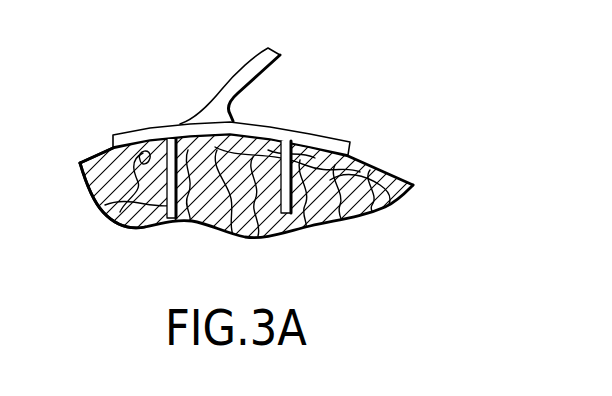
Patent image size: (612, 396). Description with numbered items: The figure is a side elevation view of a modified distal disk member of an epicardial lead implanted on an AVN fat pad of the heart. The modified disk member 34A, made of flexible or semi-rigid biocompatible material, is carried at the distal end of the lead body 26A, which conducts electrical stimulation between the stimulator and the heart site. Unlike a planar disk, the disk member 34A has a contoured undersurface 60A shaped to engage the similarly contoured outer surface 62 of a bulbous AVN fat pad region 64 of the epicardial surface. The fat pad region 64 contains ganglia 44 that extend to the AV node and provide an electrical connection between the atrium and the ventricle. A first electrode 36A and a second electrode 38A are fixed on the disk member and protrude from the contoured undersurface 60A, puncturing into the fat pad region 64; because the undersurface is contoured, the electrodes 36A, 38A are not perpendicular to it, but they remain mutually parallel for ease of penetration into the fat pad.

The lead body 26A is at (252, 60).
The modified disk member 34A is at (134, 107).
The first electrode 36A is at (312, 224).
The second electrode 38A is at (157, 219).
The ganglia 44 is at (101, 211).
The contoured undersurface 60A is at (233, 205).
The outer surface 62 is at (372, 174).
The bulbous AVN fat pad region 64 is at (97, 163).